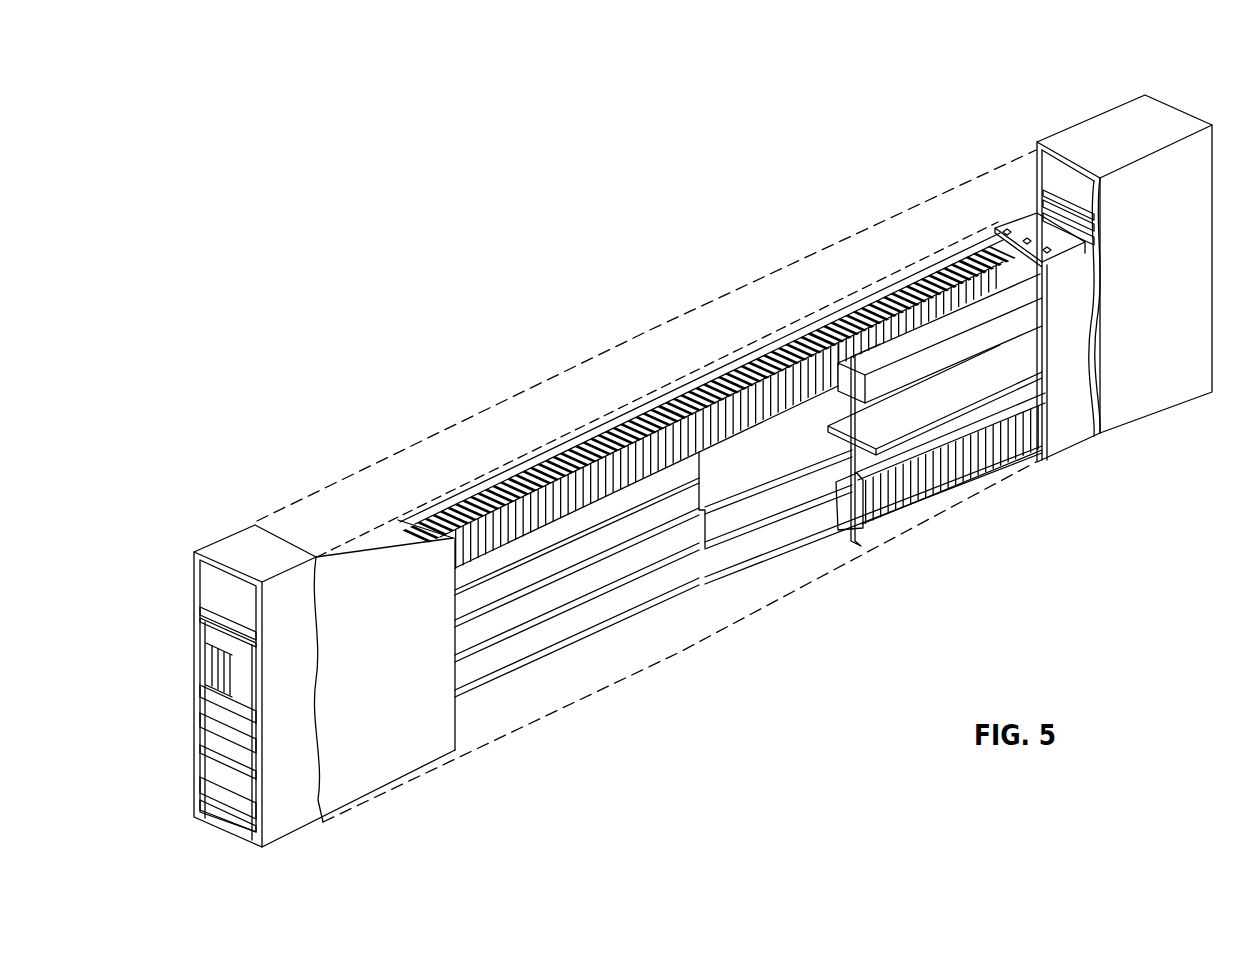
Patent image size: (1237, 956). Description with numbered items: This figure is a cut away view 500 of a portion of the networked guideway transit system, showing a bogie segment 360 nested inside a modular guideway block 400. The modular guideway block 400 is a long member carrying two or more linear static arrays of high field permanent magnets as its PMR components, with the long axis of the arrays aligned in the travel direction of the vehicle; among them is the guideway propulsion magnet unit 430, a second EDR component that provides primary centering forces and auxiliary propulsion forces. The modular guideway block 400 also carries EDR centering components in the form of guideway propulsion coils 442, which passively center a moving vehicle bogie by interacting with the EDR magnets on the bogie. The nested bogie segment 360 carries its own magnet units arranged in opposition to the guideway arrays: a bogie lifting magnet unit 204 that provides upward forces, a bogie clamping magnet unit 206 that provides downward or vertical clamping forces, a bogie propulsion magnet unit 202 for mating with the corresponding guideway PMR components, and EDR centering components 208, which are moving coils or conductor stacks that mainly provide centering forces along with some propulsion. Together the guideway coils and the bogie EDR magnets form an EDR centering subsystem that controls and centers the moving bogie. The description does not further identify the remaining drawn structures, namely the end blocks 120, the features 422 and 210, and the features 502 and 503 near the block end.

The support block 120 is at (212, 548).
The cut away view 500 is at (364, 163).
The modular guideway block 400 is at (733, 361).
The guideway propulsion coils 442 is at (777, 330).
The guide rail 422 is at (748, 500).
The guideway propulsion magnet unit 430 is at (731, 553).
The bogie propulsion magnet unit 202 is at (878, 390).
The bogie lifting magnet unit 204 is at (932, 428).
The bogie clamping magnet unit 206 is at (1003, 447).
The EDR centering components 208 is at (907, 510).
The vertical plate 210 is at (862, 545).
The bogie segment 360 is at (1006, 376).
The mounting hole 502 is at (1007, 230).
The mounting hole 503 is at (1025, 237).